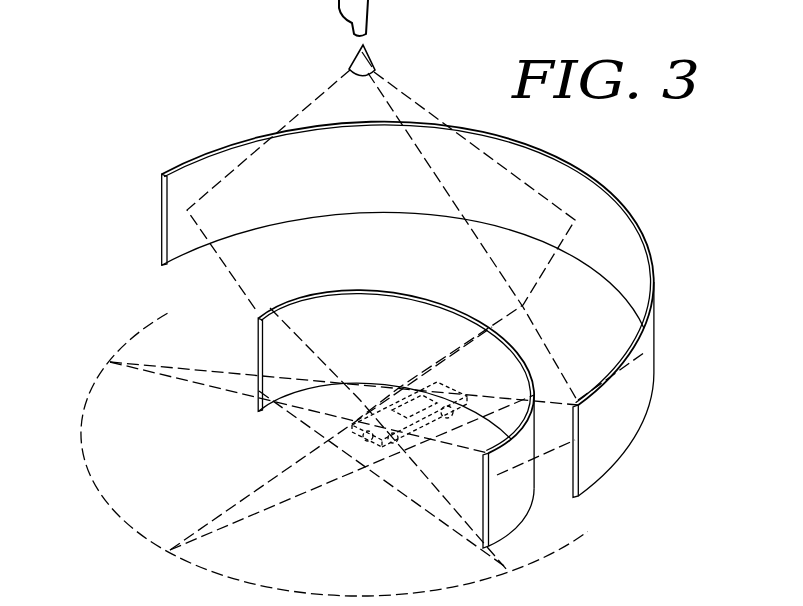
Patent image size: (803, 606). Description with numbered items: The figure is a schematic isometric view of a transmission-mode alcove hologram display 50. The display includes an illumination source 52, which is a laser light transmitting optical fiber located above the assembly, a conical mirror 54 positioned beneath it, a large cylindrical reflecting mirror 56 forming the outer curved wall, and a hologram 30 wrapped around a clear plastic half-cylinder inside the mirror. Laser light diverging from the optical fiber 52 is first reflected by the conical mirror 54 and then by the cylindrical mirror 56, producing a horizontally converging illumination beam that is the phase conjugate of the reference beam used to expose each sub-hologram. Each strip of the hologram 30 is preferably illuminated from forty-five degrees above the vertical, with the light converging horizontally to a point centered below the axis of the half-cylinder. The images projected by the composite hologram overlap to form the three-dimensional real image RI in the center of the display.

The hologram 30 is at (503, 496).
The alcove hologram display 50 is at (245, 123).
The illumination source 52 is at (370, 22).
The conical mirror 54 is at (374, 58).
The cylindrical reflecting mirror 56 is at (655, 243).
The three-dimensional real image RI is at (412, 443).